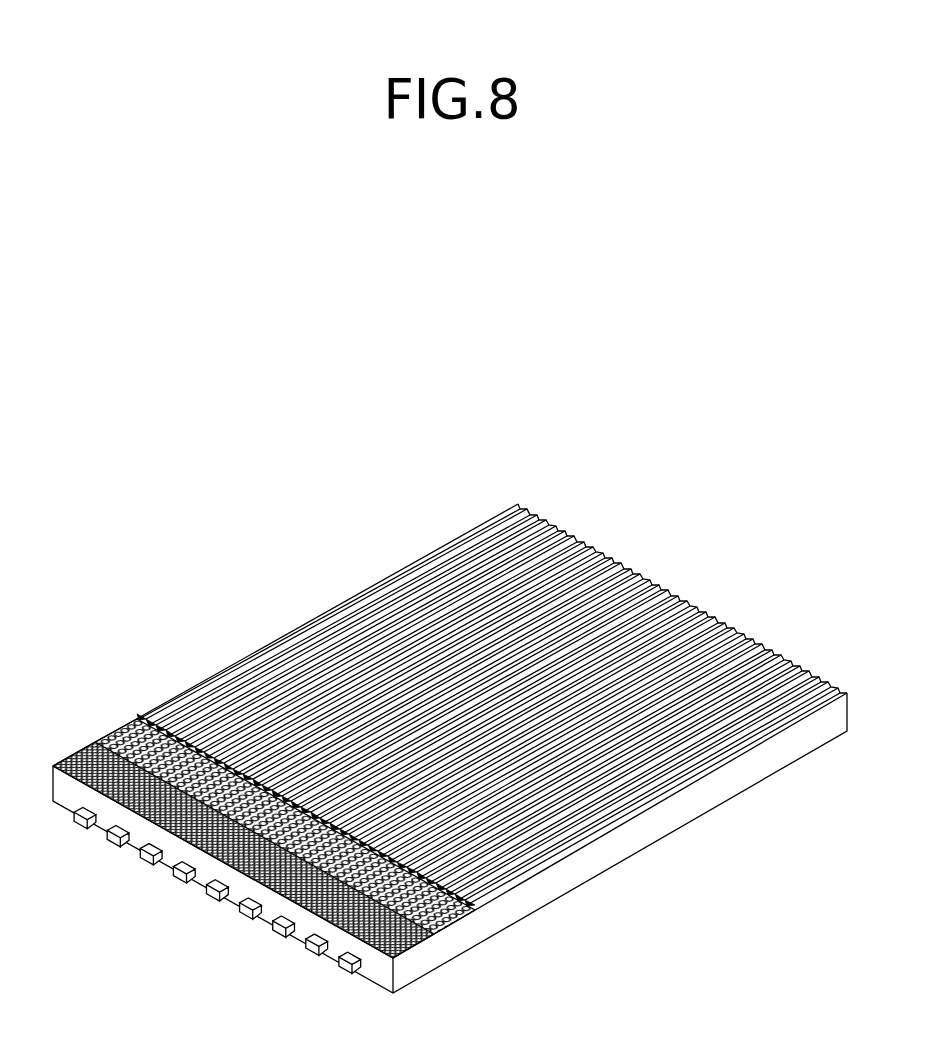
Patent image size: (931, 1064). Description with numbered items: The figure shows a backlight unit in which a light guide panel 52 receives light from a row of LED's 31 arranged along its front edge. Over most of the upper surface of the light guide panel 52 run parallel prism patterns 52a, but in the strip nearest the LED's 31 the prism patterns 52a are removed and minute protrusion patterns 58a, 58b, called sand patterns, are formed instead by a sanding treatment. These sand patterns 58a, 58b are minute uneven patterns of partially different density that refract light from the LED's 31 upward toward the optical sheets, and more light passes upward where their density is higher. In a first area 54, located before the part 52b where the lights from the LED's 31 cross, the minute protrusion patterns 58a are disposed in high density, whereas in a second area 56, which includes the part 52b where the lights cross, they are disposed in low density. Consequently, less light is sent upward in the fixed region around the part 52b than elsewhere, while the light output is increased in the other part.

The LED 31 is at (110, 845).
The light guide panel 52 is at (778, 760).
The prism pattern 52a is at (655, 802).
The part where the lights from the LEDs cross 52b is at (463, 922).
The first area 54 is at (408, 947).
The second area 56 is at (443, 927).
The minute protrusion pattern 58a is at (72, 758).
The minute protrusion pattern 58b is at (127, 723).